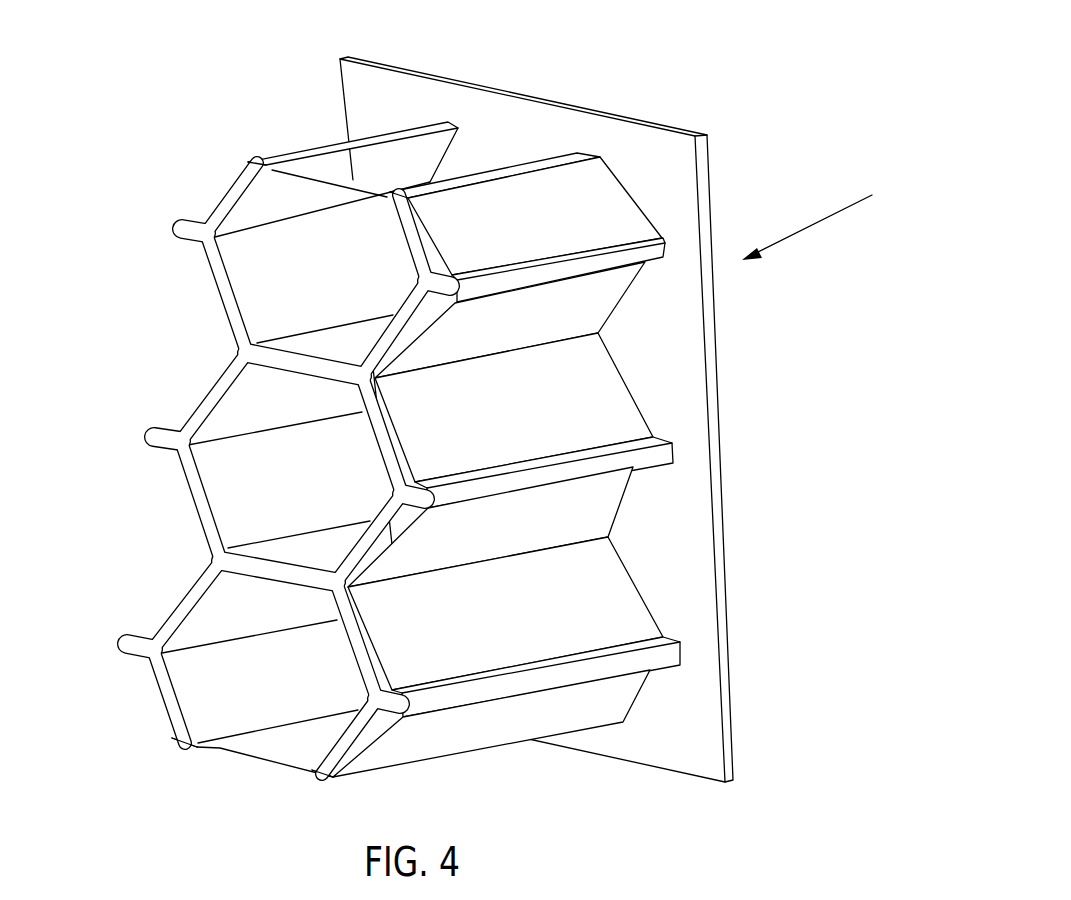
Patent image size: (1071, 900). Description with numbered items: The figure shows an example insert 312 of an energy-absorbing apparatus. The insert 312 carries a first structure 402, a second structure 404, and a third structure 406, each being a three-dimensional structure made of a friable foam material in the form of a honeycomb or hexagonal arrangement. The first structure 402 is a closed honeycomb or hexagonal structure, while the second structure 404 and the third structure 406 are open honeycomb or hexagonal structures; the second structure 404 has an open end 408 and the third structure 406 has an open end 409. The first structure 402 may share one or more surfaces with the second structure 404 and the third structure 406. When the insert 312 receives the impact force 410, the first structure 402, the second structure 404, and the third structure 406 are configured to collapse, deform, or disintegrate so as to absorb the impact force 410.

The insert 312 is at (736, 80).
The first structure 402 is at (370, 454).
The second structure 404 is at (218, 174).
The third structure 406 is at (166, 590).
The open end 408 is at (323, 188).
The open end 409 is at (266, 761).
The impact force 410 is at (808, 227).